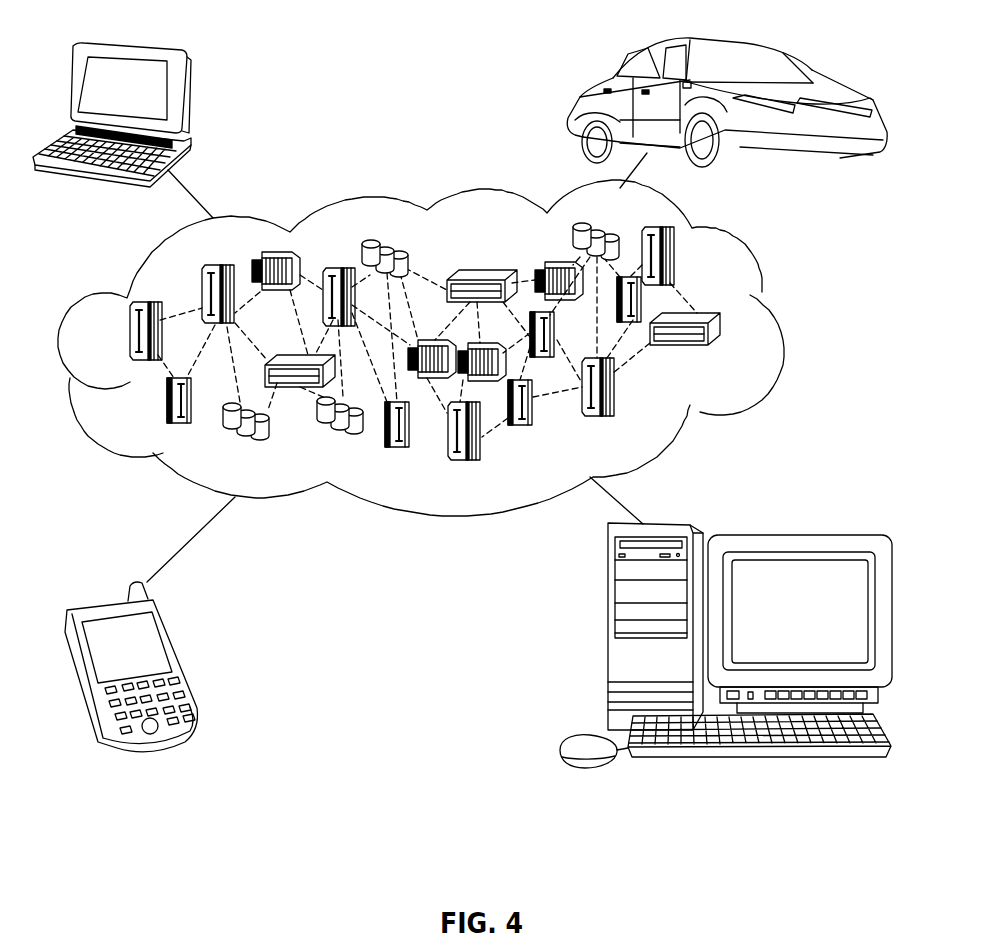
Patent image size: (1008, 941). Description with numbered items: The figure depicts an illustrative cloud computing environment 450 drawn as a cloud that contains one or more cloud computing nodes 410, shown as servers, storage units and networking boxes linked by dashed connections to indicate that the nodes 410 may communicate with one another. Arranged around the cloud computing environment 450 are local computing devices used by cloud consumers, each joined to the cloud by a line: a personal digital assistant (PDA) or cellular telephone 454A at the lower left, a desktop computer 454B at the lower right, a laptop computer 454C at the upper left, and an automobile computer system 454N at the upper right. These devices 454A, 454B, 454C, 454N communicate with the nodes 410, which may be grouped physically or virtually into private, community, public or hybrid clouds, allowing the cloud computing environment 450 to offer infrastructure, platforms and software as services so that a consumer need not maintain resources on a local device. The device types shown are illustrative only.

The cloud computing nodes 410 is at (735, 347).
The cloud computing environment 450 is at (760, 290).
The personal digital assistant (PDA) or cellular telephone 454A is at (180, 657).
The desktop computer 454B is at (607, 633).
The laptop computer 454C is at (183, 92).
The automobile computer system 454N is at (580, 98).